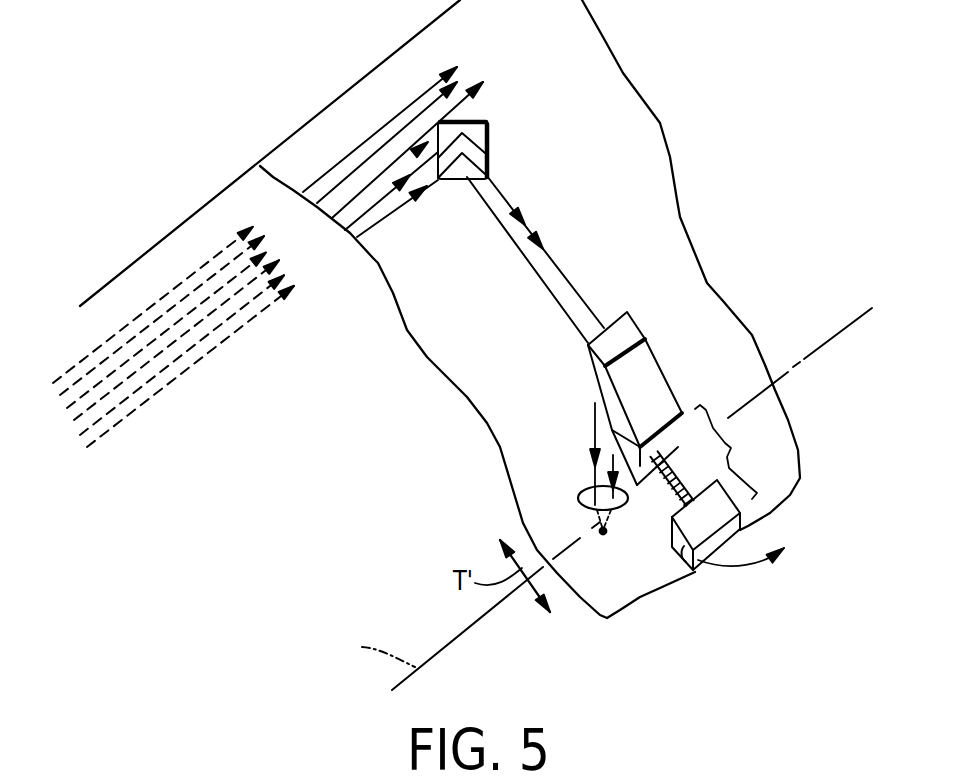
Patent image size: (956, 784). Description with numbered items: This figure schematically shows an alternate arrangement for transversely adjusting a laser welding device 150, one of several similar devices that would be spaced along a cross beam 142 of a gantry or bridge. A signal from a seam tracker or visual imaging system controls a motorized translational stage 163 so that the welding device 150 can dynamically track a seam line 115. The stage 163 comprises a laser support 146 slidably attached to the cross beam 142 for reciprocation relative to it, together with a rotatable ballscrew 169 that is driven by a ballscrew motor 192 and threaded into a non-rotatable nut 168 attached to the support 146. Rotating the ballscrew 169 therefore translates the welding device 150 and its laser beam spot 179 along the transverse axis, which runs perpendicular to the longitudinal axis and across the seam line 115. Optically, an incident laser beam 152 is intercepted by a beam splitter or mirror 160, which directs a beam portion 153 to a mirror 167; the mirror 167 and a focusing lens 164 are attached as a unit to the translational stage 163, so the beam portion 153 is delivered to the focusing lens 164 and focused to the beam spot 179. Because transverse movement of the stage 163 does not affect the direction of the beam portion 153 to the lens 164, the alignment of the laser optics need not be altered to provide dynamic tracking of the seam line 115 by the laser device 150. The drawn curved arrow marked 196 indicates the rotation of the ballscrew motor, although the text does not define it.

The seam line 115 is at (453, 637).
The cross beam 142 is at (378, 66).
The laser support 146 is at (650, 373).
The welding device 150 is at (583, 418).
The incident laser beam 152 is at (212, 350).
The beam portion 153 is at (557, 263).
The beam splitter or mirror 160 is at (478, 138).
The motorized translational stage 163 is at (530, 309).
The focusing lens 164 is at (581, 490).
The mirror 167 is at (630, 332).
The non-rotatable nut 168 is at (672, 448).
The rotatable ballscrew 169 is at (665, 496).
The laser beam spot 179 is at (600, 532).
The ballscrew motor 192 is at (715, 522).
The rotation arc 196 is at (746, 561).